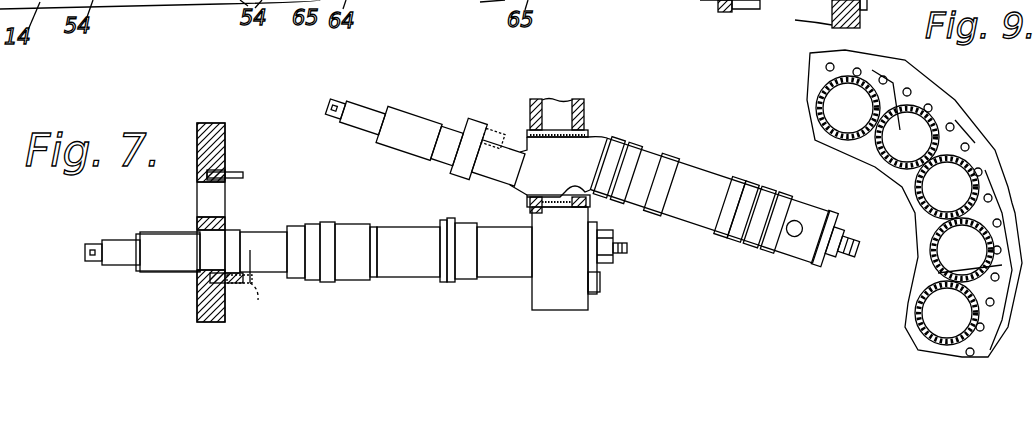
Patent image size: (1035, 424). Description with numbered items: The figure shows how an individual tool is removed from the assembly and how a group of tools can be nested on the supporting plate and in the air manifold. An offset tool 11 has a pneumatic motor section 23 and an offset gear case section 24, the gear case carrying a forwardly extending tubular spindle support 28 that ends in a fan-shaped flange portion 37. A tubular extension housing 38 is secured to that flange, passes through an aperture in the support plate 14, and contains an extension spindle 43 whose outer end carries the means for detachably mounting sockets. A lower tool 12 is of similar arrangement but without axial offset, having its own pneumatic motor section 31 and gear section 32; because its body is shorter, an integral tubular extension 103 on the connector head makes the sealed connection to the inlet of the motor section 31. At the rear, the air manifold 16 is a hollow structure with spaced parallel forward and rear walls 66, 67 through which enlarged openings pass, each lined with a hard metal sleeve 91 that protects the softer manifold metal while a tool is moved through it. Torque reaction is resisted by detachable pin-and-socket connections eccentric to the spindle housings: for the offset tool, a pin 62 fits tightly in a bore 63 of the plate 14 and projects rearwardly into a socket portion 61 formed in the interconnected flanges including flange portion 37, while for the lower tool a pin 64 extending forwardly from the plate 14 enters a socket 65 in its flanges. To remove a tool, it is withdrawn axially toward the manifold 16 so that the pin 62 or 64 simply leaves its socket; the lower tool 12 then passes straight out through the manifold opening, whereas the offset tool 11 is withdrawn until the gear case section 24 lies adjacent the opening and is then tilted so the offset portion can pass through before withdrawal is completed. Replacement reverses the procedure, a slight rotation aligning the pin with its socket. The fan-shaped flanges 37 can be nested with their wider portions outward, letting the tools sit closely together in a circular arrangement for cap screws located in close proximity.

In FIG. 7, the offset tool 11 is at (708, 164).
In FIG. 7, the tool 12 is at (402, 288).
In FIG. 7, the support plate 14 is at (197, 141).
In FIG. 7, the air manifold 16 is at (528, 293).
In FIG. 7, the pneumatic motor section 23 is at (797, 212).
In FIG. 7, the offset gear case section 24 is at (568, 158).
In FIG. 7, the tubular spindle support 28 is at (510, 175).
In FIG. 7, the pneumatic motor section 31 is at (413, 232).
In FIG. 7, the gear section 32 is at (357, 272).
In FIG. 9, the flange portion 37 is at (872, 70).
In FIG. 7, the tubular extension housing 38 is at (412, 137).
In FIG. 7, the extension spindle 43 is at (357, 110).
In FIG. 7, the socket portion 61 is at (480, 113).
In FIG. 7, the pin 62 is at (243, 175).
In FIG. 7, the bore 63 is at (222, 168).
In FIG. 7, the pin 64 is at (205, 292).
In FIG. 7, the socket 65 is at (258, 300).
In FIG. 7, the forward wall 66 is at (535, 100).
In FIG. 7, the rear wall 67 is at (582, 100).
In FIG. 7, the sleeve 91 is at (530, 125).
In FIG. 7, the tubular extension 103 is at (505, 262).